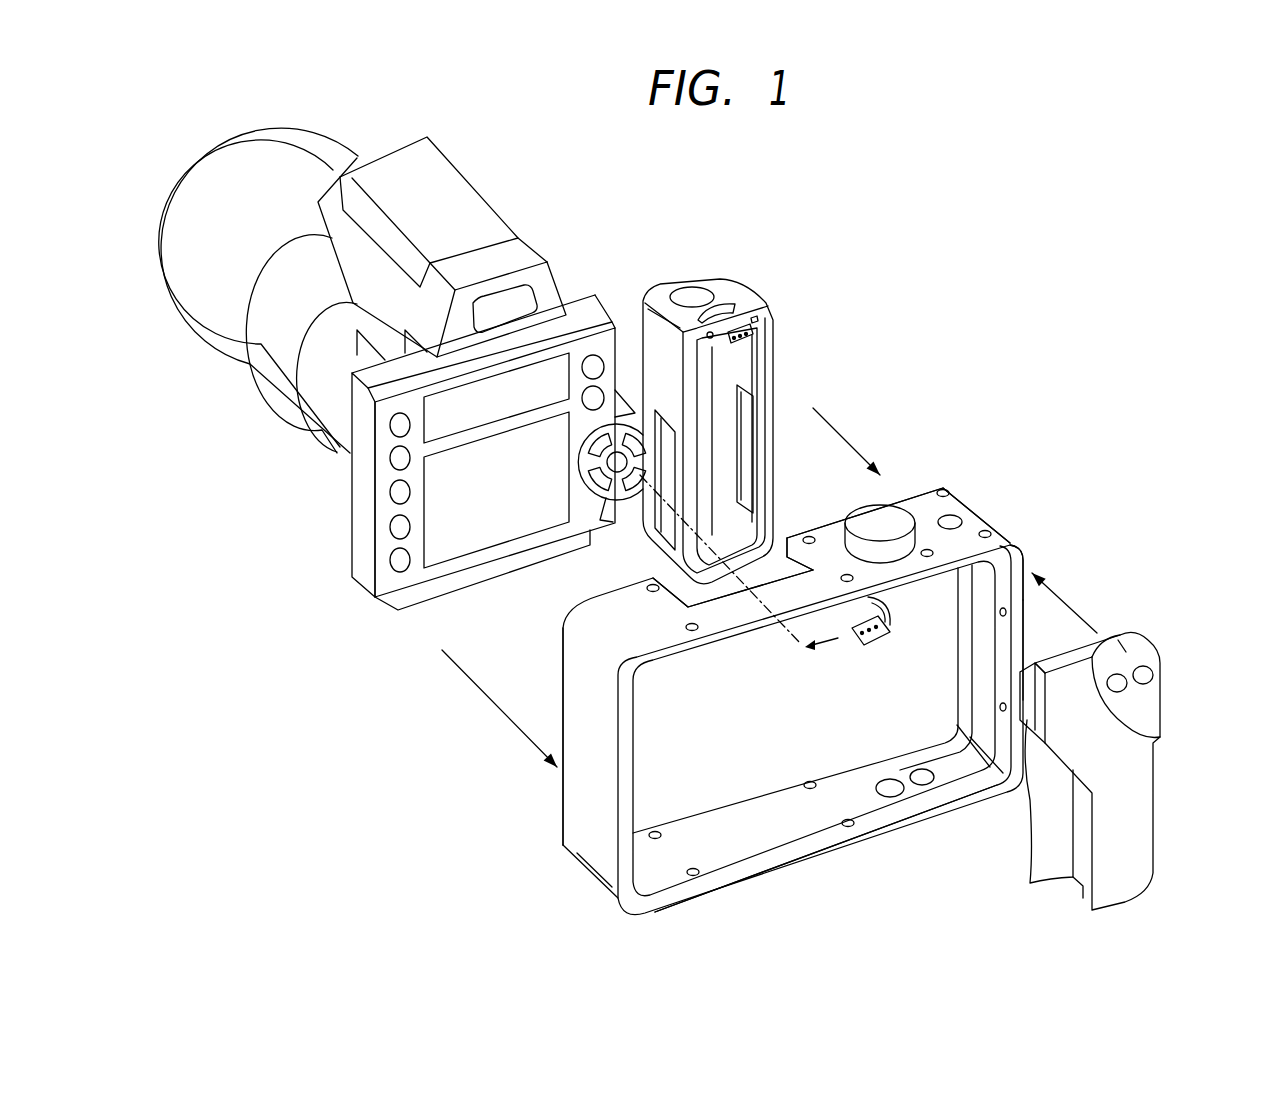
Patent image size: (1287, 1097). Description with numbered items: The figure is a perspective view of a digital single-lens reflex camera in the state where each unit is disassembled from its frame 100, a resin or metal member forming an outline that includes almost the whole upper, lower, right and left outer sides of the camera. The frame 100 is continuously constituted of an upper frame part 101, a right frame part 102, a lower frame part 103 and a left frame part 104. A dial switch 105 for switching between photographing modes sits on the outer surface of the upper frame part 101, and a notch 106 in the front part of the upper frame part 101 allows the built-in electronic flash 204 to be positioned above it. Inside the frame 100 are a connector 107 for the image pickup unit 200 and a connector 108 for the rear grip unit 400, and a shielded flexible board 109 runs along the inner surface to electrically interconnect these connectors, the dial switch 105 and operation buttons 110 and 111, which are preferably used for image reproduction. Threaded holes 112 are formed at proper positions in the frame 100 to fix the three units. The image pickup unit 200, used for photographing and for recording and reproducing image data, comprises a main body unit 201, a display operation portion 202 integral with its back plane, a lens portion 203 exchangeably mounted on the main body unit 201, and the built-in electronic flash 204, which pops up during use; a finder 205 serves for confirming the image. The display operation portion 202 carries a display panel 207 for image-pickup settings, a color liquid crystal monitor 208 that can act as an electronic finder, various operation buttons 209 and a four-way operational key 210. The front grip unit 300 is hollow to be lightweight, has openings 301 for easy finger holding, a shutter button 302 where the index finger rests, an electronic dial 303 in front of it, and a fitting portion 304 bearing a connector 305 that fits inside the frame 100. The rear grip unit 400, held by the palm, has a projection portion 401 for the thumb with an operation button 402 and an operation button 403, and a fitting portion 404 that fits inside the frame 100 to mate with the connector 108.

The frame 100 is at (997, 507).
The upper frame part 101 is at (913, 503).
The right frame part 102 is at (570, 808).
The lower frame part 103 is at (820, 850).
The left frame part 104 is at (1033, 565).
The dial switch 105 is at (880, 513).
The notch 106 is at (727, 590).
The connector 107 is at (880, 648).
The connector 108 is at (1015, 548).
The shielded flexible board 109 is at (963, 772).
The operation button 110 is at (890, 797).
The operation button 111 is at (925, 785).
The threaded holes 112 is at (985, 533).
The image pickup unit 200 is at (558, 267).
The main body unit 201 is at (325, 418).
The display operation portion 202 is at (393, 587).
The lens portion 203 is at (257, 340).
The built-in electronic flash 204 is at (493, 220).
The finder 205 is at (524, 312).
The display panel 207 is at (500, 408).
The color liquid crystal monitor 208 is at (497, 545).
The operation buttons 209 is at (391, 428).
The four-way operational key 210 is at (622, 495).
The front grip unit 300 is at (763, 288).
The openings 301 is at (742, 447).
The shutter button 302 is at (692, 292).
The electronic dial 303 is at (722, 302).
The fitting portion 304 is at (770, 352).
The connector 305 is at (752, 322).
The rear grip unit 400 is at (1162, 783).
The projection portion 401 is at (1158, 700).
The operation button 402 is at (1146, 672).
The operation button 403 is at (1112, 678).
The fitting portion 404 is at (1030, 885).